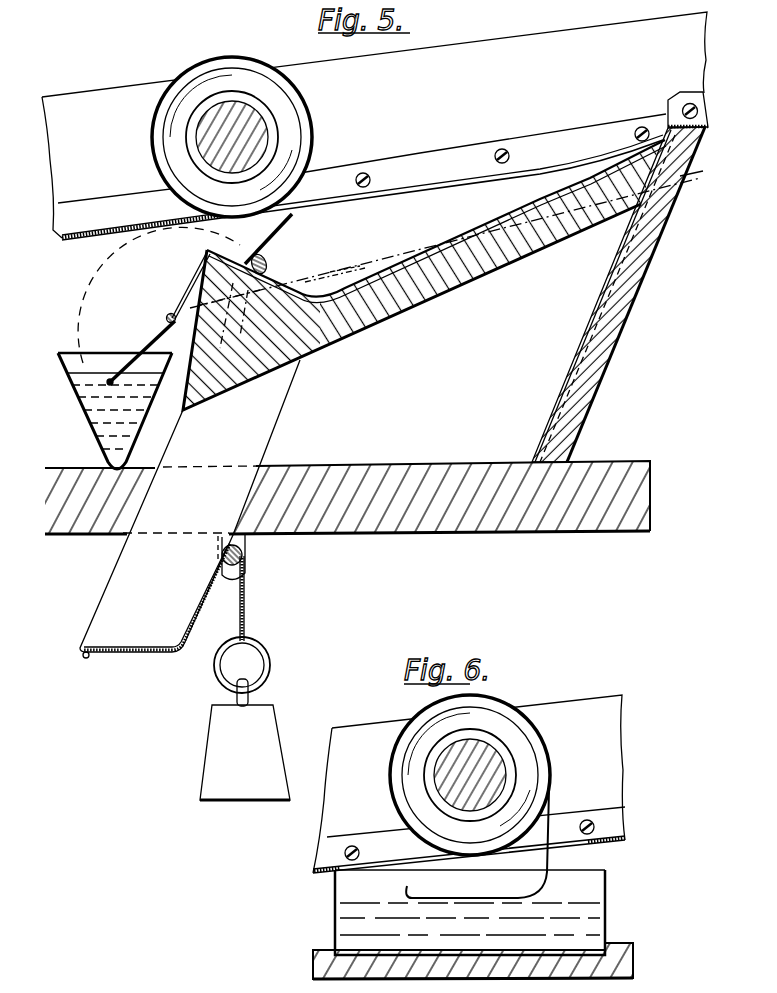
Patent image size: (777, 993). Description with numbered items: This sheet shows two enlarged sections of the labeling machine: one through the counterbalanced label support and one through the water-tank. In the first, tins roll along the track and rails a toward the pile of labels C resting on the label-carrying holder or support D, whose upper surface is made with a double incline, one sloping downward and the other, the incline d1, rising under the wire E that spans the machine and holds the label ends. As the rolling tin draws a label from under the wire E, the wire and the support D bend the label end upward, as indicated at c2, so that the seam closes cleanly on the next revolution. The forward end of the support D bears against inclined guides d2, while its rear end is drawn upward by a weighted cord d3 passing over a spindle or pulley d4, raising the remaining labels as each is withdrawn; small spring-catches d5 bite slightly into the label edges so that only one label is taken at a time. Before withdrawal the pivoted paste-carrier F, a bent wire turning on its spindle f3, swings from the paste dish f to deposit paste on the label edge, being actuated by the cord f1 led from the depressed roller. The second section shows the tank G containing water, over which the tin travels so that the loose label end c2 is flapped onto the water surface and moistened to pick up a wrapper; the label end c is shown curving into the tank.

In FIG. 5, the rails a is at (560, 156).
In FIG. 6, the rails a is at (374, 871).
In FIG. 5, the labels C is at (455, 240).
In FIG. 6, the labels C is at (553, 808).
In FIG. 5, the wheel arm c is at (268, 239).
In FIG. 5, the wire E is at (265, 257).
In FIG. 5, the label-carrying holder or support D is at (436, 290).
In FIG. 5, the upward incline d1 is at (446, 239).
In FIG. 5, the inclined guides d2 is at (618, 294).
In FIG. 5, the weighted cord d3 is at (260, 598).
In FIG. 5, the spindle or pulley d4 is at (247, 556).
In FIG. 5, the spring-catches d5 is at (329, 256).
In FIG. 5, the paste-carrier F is at (165, 303).
In FIG. 5, the paste dish or pot f is at (90, 395).
In FIG. 5, the cord f1 is at (343, 259).
In FIG. 5, the spindle f3 is at (176, 312).
In FIG. 6, the tank G is at (470, 912).
In FIG. 6, the bent label end c2 is at (414, 890).